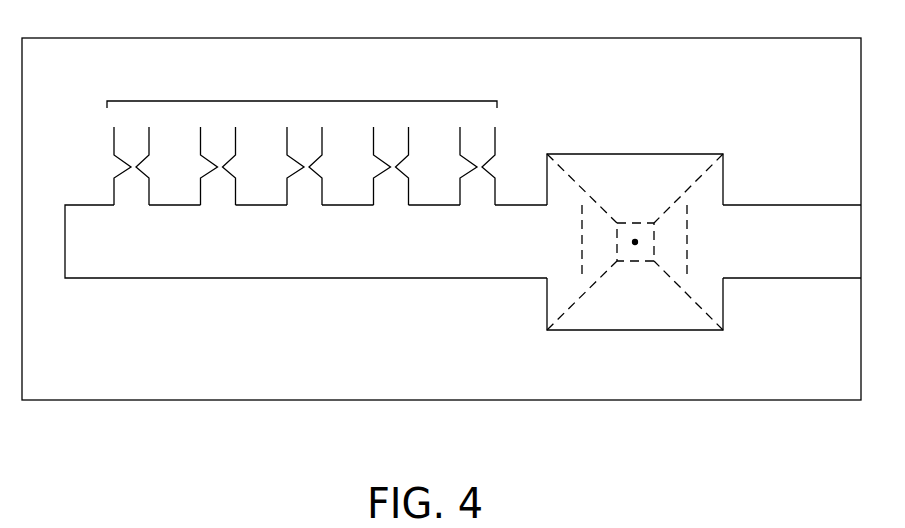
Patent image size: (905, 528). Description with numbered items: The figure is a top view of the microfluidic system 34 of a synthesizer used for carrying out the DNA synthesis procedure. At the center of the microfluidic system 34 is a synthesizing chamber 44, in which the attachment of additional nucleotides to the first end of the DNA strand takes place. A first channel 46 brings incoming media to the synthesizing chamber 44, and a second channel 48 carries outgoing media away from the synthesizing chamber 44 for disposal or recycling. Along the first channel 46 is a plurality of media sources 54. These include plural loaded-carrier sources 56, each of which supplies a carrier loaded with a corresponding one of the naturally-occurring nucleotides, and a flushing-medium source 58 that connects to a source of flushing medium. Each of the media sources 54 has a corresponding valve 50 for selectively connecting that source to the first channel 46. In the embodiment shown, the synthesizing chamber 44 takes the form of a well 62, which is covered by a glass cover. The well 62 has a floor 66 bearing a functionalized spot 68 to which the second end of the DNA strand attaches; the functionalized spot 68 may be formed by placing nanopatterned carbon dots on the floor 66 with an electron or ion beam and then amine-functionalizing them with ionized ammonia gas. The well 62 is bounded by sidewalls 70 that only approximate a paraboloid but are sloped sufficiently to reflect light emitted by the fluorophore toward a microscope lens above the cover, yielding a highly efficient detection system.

The microfluidic system 34 is at (183, 315).
The synthesizing chamber 44 is at (621, 311).
The first channel 46 is at (323, 253).
The second channel 48 is at (758, 253).
The valve 50 is at (137, 167).
The media sources 54 is at (304, 100).
The loaded-carrier source 56 is at (144, 153).
The flushing-medium source 58 is at (490, 153).
The well 62 is at (568, 153).
The floor 66 is at (617, 224).
The functionalized spot 68 is at (635, 240).
The sidewalls 70 is at (690, 158).